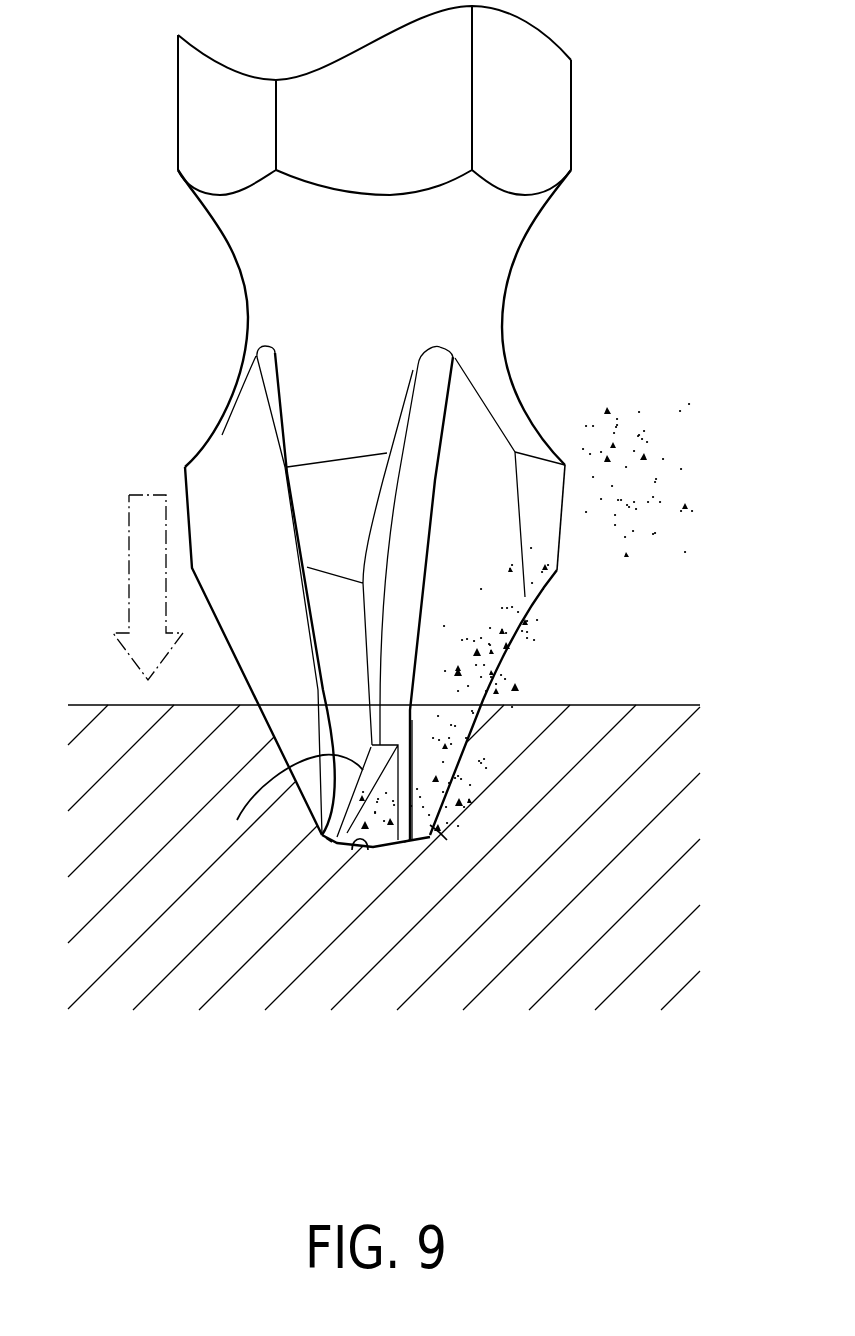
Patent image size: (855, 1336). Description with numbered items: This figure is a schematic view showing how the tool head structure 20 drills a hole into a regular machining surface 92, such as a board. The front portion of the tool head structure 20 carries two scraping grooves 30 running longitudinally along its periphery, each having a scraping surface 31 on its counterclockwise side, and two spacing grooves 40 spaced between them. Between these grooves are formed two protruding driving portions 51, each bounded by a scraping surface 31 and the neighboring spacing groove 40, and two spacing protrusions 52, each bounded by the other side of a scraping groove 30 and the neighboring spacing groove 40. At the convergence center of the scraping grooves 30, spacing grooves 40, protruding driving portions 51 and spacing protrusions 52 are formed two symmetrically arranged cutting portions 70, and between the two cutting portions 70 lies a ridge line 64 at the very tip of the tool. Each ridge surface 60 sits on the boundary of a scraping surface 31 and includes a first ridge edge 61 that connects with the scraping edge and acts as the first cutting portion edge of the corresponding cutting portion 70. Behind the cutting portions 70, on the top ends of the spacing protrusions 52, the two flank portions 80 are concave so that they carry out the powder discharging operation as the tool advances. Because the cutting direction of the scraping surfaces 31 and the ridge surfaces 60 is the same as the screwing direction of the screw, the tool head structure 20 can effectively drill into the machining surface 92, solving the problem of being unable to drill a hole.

The tool head structure 20 is at (592, 128).
The scraping groove 30 is at (472, 457).
The scraping surface 31 is at (468, 587).
The spacing groove 40 is at (243, 470).
The protruding driving portion 51 is at (542, 512).
The spacing protrusion 52 is at (337, 497).
The ridge surface 60 is at (447, 840).
The first ridge edge 61 is at (357, 840).
The ridge line 64 is at (373, 848).
The cutting portion 70 is at (407, 843).
The flank portion 80 is at (237, 820).
The machining surface 92 is at (112, 728).